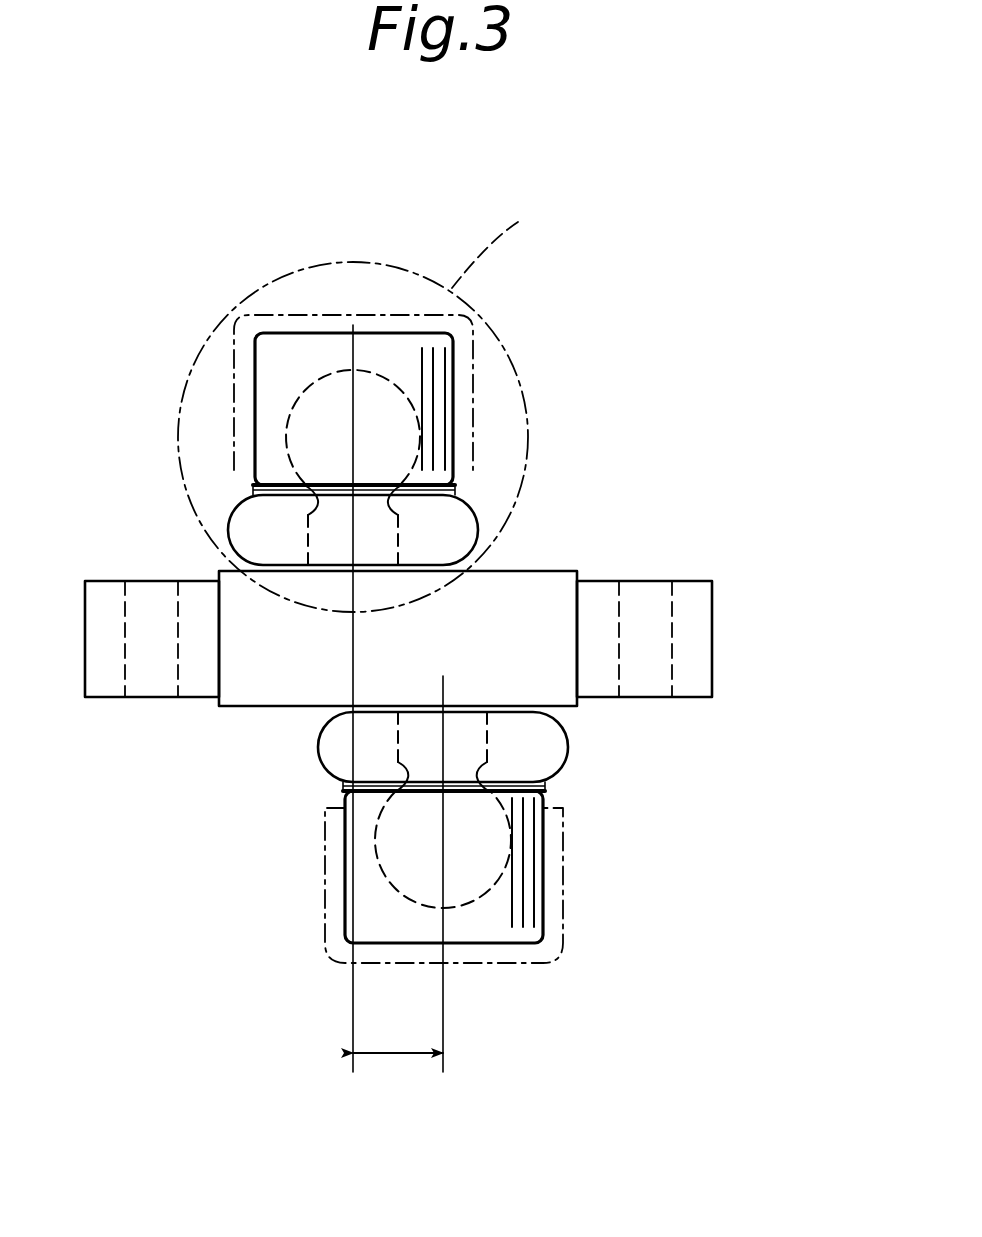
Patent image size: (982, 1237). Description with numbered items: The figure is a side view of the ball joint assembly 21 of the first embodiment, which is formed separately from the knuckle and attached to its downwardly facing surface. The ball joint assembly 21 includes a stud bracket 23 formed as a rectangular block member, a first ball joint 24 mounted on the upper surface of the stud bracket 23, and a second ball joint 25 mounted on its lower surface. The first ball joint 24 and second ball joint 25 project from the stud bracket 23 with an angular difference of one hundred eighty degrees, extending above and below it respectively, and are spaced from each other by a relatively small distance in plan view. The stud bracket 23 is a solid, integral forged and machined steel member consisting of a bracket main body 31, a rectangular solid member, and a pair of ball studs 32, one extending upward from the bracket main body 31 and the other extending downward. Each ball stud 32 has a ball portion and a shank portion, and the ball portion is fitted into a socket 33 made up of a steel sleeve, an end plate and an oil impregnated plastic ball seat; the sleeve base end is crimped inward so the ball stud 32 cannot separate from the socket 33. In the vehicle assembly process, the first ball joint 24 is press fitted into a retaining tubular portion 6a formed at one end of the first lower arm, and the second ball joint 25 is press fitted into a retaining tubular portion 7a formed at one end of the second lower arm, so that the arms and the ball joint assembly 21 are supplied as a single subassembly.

The ball joint assembly 21 is at (700, 341).
The stud bracket 23 is at (565, 558).
The first ball joint 24 is at (472, 398).
The second ball joint 25 is at (335, 907).
The bracket main body 31 is at (250, 698).
The ball stud 32 is at (323, 378).
The socket 33 is at (372, 348).
The retaining tubular portion 6a is at (234, 395).
The retaining tubular portion 7a is at (563, 838).